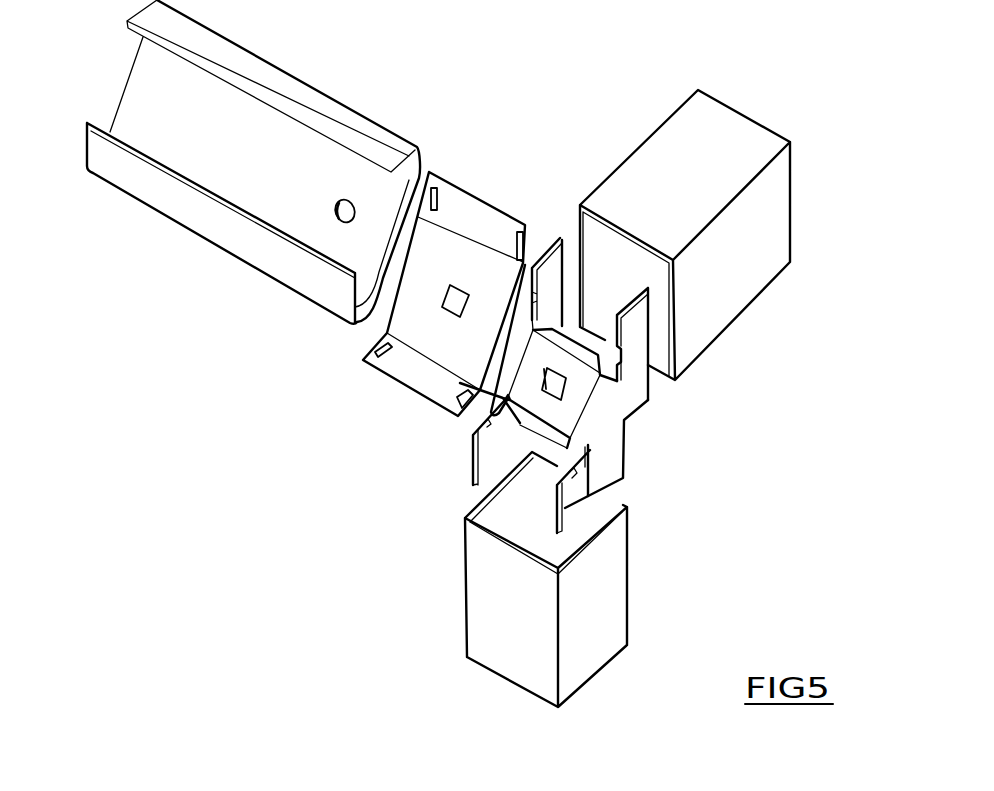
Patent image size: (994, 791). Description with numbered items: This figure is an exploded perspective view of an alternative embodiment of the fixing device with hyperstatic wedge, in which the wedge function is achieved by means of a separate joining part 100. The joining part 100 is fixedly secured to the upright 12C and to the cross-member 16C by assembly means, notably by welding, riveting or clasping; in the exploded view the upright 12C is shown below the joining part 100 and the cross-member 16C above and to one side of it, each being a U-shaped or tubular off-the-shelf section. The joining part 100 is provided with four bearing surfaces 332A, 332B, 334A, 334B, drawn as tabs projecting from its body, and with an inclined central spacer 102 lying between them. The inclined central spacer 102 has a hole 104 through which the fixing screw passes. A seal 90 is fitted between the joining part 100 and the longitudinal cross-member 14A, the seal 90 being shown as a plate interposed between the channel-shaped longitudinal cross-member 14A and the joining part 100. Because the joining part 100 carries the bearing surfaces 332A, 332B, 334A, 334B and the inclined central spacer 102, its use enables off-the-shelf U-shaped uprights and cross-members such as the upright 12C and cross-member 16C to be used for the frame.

The longitudinal cross-member 14A is at (213, 217).
The cross-member 16C is at (700, 136).
The upright 12C is at (497, 605).
The seal 90 is at (413, 373).
The joining part 100 is at (620, 412).
The inclined central spacer 102 is at (568, 367).
The hole 104 is at (552, 385).
The bearing surface 332A is at (570, 483).
The bearing surface 332B is at (623, 337).
The bearing surface 334A is at (483, 421).
The bearing surface 334B is at (531, 266).